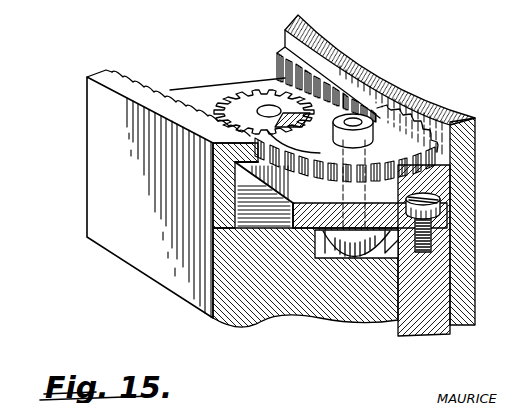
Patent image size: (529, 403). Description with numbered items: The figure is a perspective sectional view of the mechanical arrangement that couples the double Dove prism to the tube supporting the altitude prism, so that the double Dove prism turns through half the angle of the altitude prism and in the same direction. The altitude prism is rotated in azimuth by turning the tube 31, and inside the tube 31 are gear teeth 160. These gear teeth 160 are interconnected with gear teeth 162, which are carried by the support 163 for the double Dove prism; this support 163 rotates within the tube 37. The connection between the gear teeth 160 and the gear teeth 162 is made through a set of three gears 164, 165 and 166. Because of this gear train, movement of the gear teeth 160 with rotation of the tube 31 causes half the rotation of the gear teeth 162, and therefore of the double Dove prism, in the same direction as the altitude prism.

The gear teeth 160 is at (283, 47).
The gear teeth 162 is at (120, 76).
The support 163 is at (243, 319).
The gear 164 is at (392, 113).
The gear 165 is at (285, 165).
The gear 166 is at (240, 110).
The tube 31 is at (473, 258).
The tube 37 is at (424, 334).